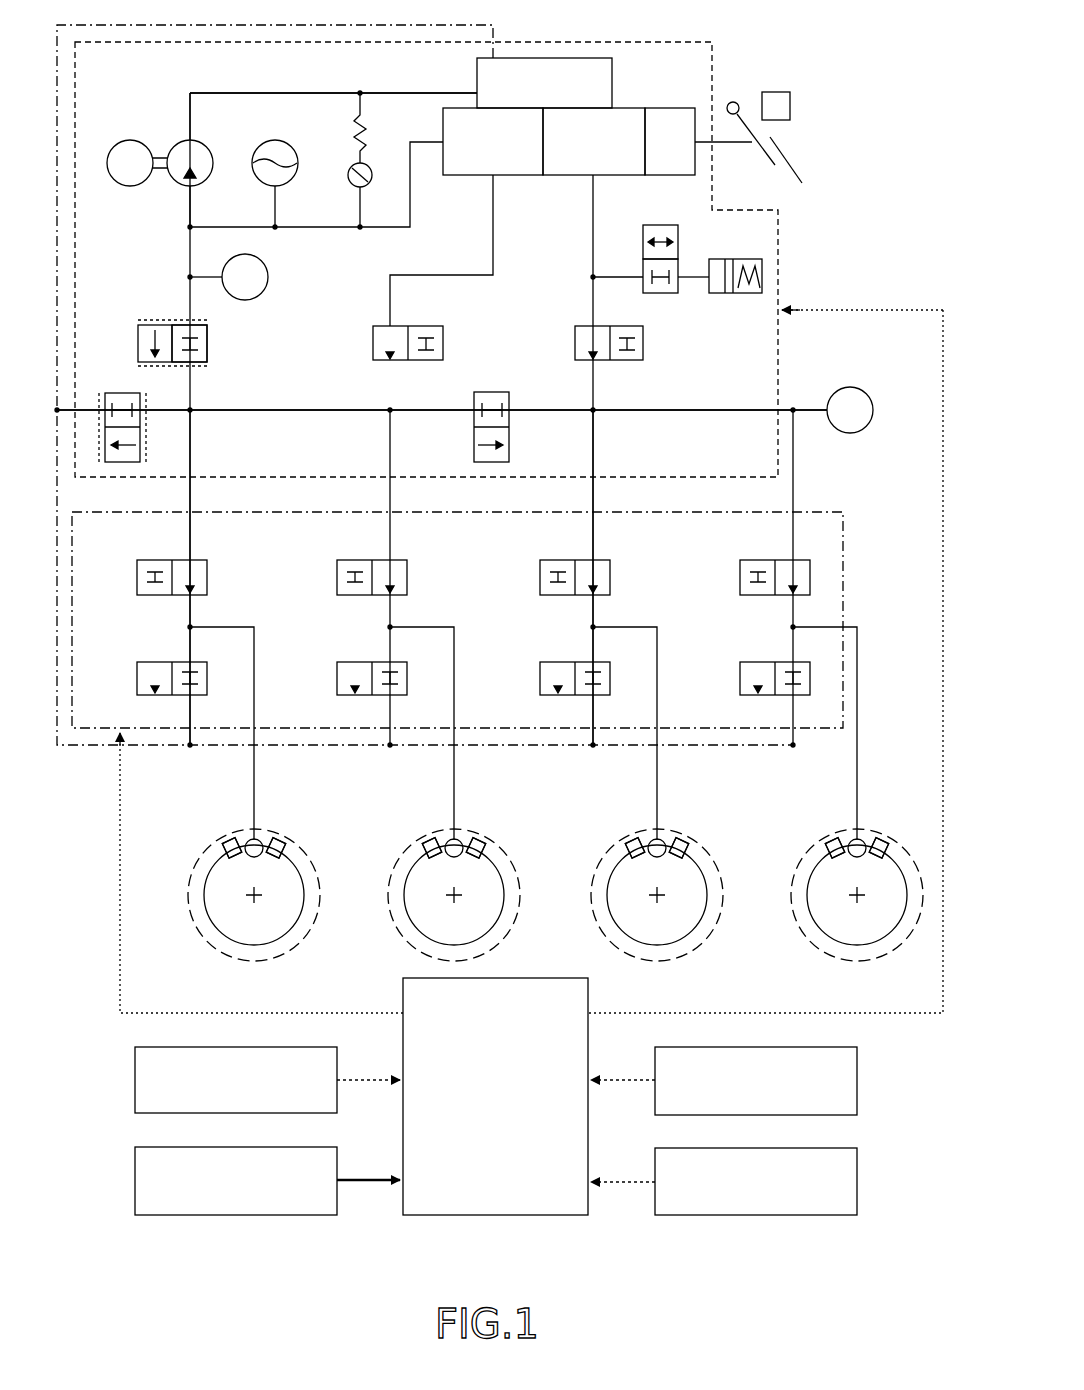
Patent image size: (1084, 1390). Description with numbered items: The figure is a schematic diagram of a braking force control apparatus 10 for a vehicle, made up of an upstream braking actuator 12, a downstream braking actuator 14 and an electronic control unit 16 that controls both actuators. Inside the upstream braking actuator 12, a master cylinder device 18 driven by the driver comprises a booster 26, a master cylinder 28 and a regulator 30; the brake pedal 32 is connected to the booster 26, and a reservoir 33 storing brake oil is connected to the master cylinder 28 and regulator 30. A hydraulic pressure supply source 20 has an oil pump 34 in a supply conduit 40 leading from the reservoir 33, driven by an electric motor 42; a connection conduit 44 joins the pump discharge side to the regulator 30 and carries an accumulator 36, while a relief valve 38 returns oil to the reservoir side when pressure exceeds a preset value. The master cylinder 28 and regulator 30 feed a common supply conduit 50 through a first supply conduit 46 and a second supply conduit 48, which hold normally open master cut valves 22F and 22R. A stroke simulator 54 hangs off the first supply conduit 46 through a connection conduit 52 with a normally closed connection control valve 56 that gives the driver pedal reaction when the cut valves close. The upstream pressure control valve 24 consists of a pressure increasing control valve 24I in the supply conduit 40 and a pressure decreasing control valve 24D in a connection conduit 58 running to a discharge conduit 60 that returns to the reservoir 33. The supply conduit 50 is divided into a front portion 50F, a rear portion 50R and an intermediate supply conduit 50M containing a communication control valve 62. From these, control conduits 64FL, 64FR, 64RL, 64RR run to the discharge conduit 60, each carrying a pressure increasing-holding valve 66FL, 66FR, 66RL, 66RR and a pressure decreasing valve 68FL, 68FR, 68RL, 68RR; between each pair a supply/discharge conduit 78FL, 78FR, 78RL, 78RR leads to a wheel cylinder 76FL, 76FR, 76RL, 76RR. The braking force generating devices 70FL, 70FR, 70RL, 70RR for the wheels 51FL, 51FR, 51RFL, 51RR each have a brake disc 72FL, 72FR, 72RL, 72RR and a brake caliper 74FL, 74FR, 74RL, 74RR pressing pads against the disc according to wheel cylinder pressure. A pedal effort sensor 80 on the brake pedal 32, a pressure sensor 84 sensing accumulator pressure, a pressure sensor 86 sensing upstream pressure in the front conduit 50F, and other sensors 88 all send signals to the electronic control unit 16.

The braking force control apparatus 10 is at (782, 62).
The upstream braking actuator 12 is at (565, 42).
The downstream braking actuator 14 is at (825, 502).
The electronic control unit 16 is at (495, 1096).
The master cylinder device 18 is at (462, 100).
The hydraulic pressure supply source 20 is at (183, 97).
The master cut valve 22R is at (373, 345).
The master cut valve 22F is at (572, 342).
The upstream pressure control valve 24 is at (125, 332).
The pressure decreasing control valve 24D is at (122, 392).
The pressure increasing control valve 24I is at (210, 360).
The booster 26 is at (698, 141).
The master cylinder 28 is at (594, 141).
The regulator 30 is at (493, 141).
The brake pedal 32 is at (795, 172).
The reservoir 33 is at (612, 80).
The oil pump 34 is at (205, 147).
The accumulator 36 is at (278, 145).
The relief valve 38 is at (352, 184).
The supply conduit 40 is at (260, 93).
The electric motor 42 is at (130, 186).
The connection conduit 44 is at (370, 228).
The first supply conduit 46 is at (583, 262).
The second supply conduit 48 is at (483, 262).
The supply conduit 50 is at (683, 406).
The supply conduit 50R is at (272, 412).
The intermediate supply conduit 50M is at (520, 412).
The supply conduit 50F is at (645, 412).
The right rear wheel 51RR is at (207, 943).
The left rear wheel 51RFL is at (420, 948).
The right front wheel 51FR is at (628, 950).
The left front wheel 51FL is at (830, 950).
The connection conduit 52 is at (688, 295).
The stroke simulator 54 is at (762, 277).
The connection control valve 56 is at (640, 245).
The connection conduit 58 is at (170, 412).
The discharge conduit 60 is at (57, 110).
The communication control valve 62 is at (492, 391).
The right rear wheel control conduit 64RR is at (188, 642).
The left rear wheel control conduit 64RL is at (388, 642).
The right front wheel control conduit 64FR is at (591, 642).
The left front wheel control conduit 64FL is at (791, 642).
The pressure increasing-holding valve 66RR is at (136, 578).
The pressure increasing-holding valve 66RL is at (336, 578).
The pressure increasing-holding valve 66FR is at (539, 578).
The pressure increasing-holding valve 66FL is at (739, 578).
The pressure decreasing valve 68RR is at (136, 667).
The pressure decreasing valve 68RL is at (336, 667).
The pressure decreasing valve 68FR is at (539, 667).
The pressure decreasing valve 68FL is at (739, 667).
The braking force generating device 70RR is at (210, 868).
The braking force generating device 70RL is at (410, 868).
The braking force generating device 70FR is at (612, 866).
The braking force generating device 70FL is at (812, 866).
The brake disc 72RR is at (208, 900).
The brake disc 72RL is at (408, 900).
The brake disc 72FR is at (610, 900).
The brake disc 72FL is at (810, 900).
The brake caliper 74RR is at (275, 843).
The brake caliper 74RL is at (475, 843).
The brake caliper 74FR is at (678, 843).
The brake caliper 74FL is at (878, 843).
The wheel cylinder 76RR is at (236, 843).
The wheel cylinder 76RL is at (436, 843).
The wheel cylinder 76FR is at (639, 843).
The wheel cylinder 76FL is at (839, 843).
The supply/discharge conduit 78RR is at (218, 625).
The supply/discharge conduit 78RL is at (418, 625).
The supply/discharge conduit 78FR is at (621, 625).
The supply/discharge conduit 78FL is at (862, 640).
The pedal effort sensor 80 is at (790, 106).
The pressure sensor 84 is at (268, 277).
The pressure sensor 86 is at (850, 387).
The other sensors 88 is at (134, 1180).